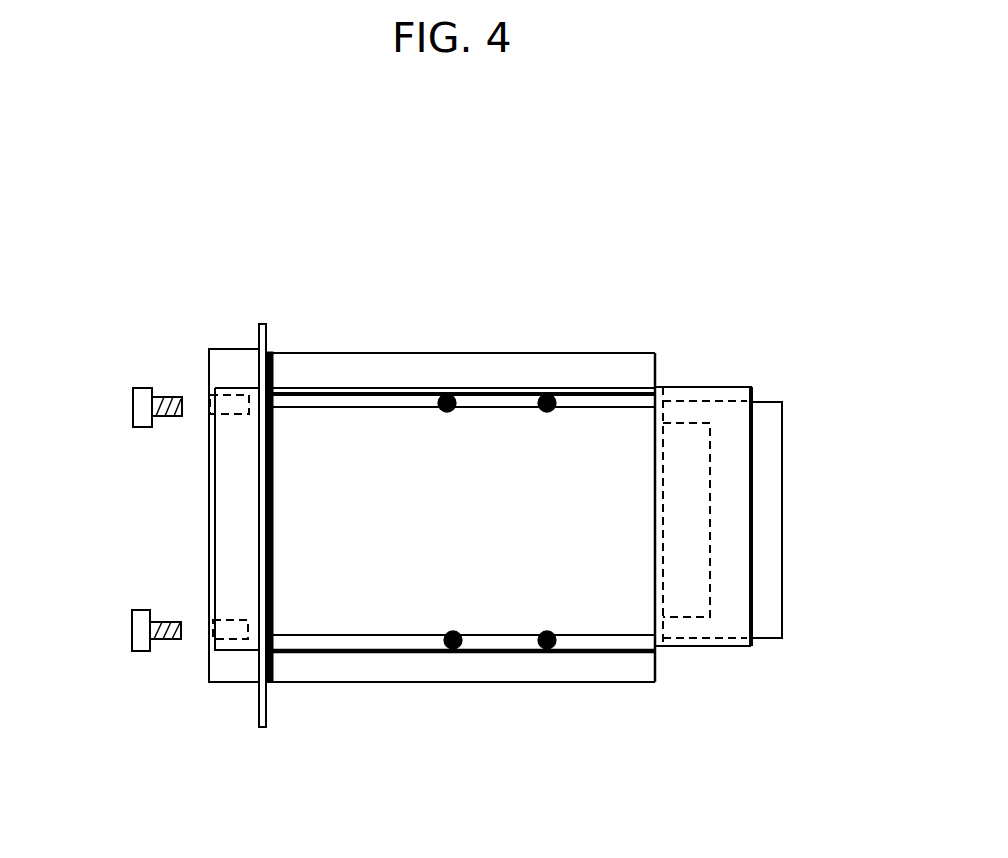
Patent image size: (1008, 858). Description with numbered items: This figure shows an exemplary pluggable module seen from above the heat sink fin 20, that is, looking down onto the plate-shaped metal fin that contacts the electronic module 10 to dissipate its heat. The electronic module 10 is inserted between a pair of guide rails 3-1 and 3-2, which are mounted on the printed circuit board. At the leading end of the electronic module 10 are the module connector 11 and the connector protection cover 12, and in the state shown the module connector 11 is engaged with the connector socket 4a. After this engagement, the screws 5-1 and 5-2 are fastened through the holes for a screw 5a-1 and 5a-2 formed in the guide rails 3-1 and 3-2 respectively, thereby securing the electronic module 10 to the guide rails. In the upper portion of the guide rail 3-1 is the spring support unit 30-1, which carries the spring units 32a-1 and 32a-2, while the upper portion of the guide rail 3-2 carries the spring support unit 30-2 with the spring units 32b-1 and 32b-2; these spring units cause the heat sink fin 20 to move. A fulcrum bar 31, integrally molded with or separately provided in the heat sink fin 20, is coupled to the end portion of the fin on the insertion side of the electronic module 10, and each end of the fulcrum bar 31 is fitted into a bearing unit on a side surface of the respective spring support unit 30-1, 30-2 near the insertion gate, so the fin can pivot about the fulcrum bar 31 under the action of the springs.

The electronic module 10 is at (228, 388).
The guide rail 3-1 is at (208, 670).
The guide rail 3-2 is at (237, 349).
The screw 5-1 is at (132, 645).
The screw 5-2 is at (133, 395).
The hole for a screw 5a-1 is at (230, 639).
The hole for a screw 5a-2 is at (227, 415).
The heat sink fin 20 is at (357, 460).
The spring support unit 30-1 is at (337, 683).
The spring support unit 30-2 is at (303, 353).
The fulcrum bar 31 is at (274, 663).
The spring unit 32a-1 is at (453, 640).
The spring unit 32a-2 is at (547, 640).
The spring unit 32b-1 is at (447, 403).
The spring unit 32b-2 is at (547, 403).
The module connector 11 is at (678, 423).
The connector protection cover 12 is at (660, 648).
The connector socket 4a is at (782, 516).